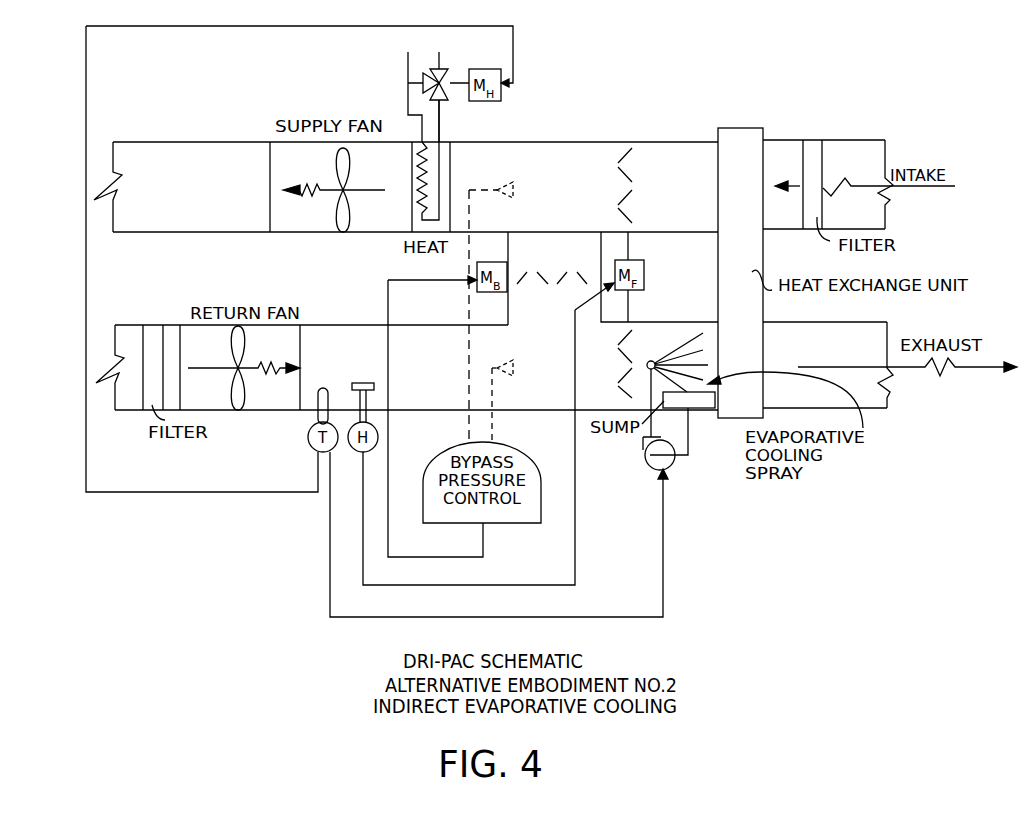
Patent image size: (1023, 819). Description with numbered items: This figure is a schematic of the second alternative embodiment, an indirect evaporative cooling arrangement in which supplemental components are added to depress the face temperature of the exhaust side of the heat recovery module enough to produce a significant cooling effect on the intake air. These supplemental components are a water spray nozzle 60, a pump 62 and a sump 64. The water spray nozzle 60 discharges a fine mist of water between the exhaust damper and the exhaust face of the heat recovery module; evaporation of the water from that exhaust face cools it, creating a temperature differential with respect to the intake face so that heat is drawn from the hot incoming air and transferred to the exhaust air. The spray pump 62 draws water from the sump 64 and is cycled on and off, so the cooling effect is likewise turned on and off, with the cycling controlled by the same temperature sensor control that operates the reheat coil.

The water spray nozzle 60 is at (652, 356).
The pump 62 is at (676, 476).
The sump 64 is at (724, 402).